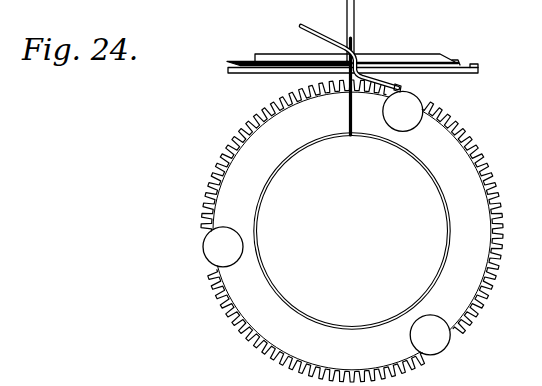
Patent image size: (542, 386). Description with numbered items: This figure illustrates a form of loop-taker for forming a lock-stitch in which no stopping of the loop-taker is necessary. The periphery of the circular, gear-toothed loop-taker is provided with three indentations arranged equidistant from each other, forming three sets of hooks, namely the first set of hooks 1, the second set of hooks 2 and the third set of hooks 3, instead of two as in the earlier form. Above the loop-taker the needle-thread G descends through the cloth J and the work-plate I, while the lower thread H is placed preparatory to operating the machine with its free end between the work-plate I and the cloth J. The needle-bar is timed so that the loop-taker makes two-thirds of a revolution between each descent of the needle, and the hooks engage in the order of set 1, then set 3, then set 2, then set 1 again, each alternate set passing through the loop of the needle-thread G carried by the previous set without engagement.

The needle-thread G is at (357, 54).
The lower thread H is at (349, 110).
The work-plate I is at (470, 64).
The cloth J is at (441, 55).
The first set of hooks 1 is at (403, 116).
The second set of hooks 2 is at (227, 247).
The third set of hooks 3 is at (430, 333).